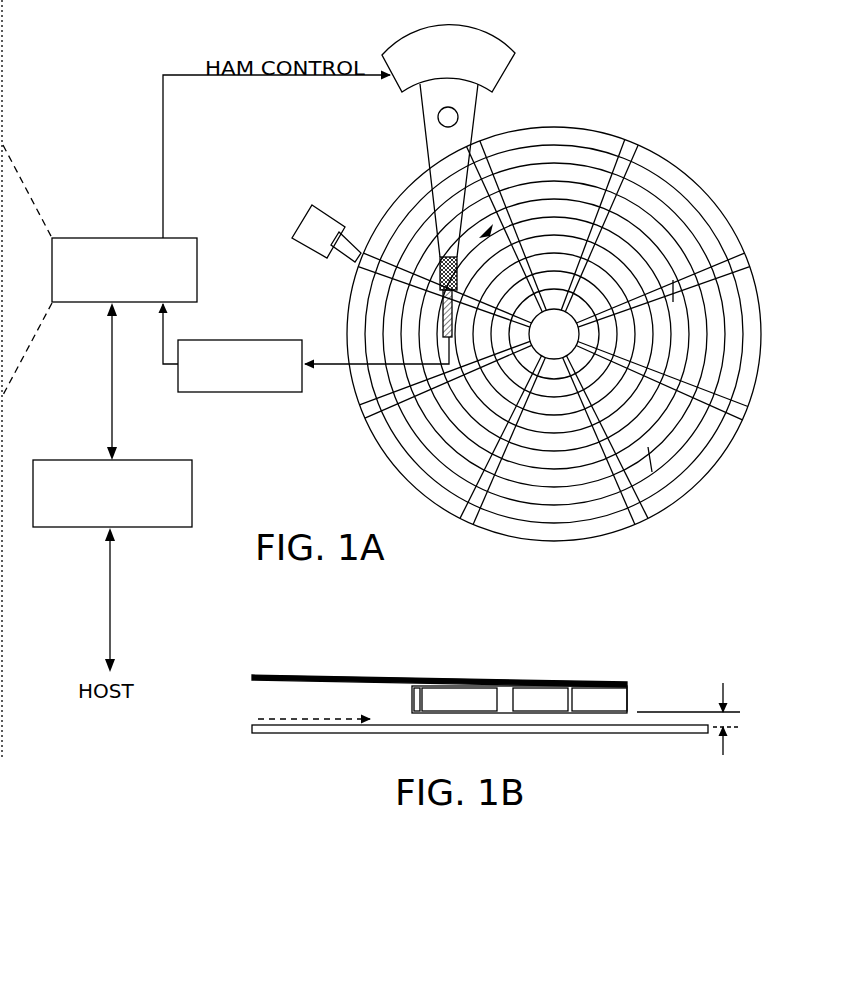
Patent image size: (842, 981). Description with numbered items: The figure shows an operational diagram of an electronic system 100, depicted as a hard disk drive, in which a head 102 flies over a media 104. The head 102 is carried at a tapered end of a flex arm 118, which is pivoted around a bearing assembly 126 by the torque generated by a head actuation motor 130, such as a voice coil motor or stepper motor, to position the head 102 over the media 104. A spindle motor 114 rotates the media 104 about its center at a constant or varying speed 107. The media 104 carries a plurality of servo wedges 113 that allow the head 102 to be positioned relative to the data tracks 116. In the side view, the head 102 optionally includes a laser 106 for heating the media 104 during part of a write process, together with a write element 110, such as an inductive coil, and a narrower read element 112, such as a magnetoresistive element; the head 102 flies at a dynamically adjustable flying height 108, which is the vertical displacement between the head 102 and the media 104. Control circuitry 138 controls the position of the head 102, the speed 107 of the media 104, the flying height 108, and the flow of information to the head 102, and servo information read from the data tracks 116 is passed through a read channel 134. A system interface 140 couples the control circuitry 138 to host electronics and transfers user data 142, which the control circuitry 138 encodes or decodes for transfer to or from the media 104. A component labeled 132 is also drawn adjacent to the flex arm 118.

In FIG. 1A, the electronic system 100 is at (686, 40).
In FIG. 1A, the head 102 is at (362, 364).
In FIG. 1B, the head 102 is at (632, 697).
In FIG. 1A, the media 104 is at (694, 178).
In FIG. 1B, the media 104 is at (340, 730).
In FIG. 1B, the laser 106 is at (478, 685).
In FIG. 1A, the speed 107 is at (562, 210).
In FIG. 1B, the speed 107 is at (296, 718).
In FIG. 1B, the flying height 108 is at (728, 693).
In FIG. 1B, the write element 110 is at (555, 685).
In FIG. 1B, the read element 112 is at (620, 685).
In FIG. 1A, the servo wedges 113 is at (625, 512).
In FIG. 1A, the spindle motor 114 is at (577, 338).
In FIG. 1A, the data tracks 116 is at (650, 451).
In FIG. 1A, the flex arm 118 is at (440, 302).
In FIG. 1B, the flex arm 118 is at (365, 677).
In FIG. 1A, the bearing assembly 126 is at (440, 122).
In FIG. 1A, the head actuation motor 130 is at (477, 53).
In FIG. 1A, the preamplifier / flex circuit 132 is at (325, 238).
In FIG. 1A, the read channel 134 is at (195, 382).
In FIG. 1A, the control circuitry 138 is at (188, 253).
In FIG. 1A, the system interface 140 is at (125, 520).
In FIG. 1A, the user data 142 is at (112, 370).